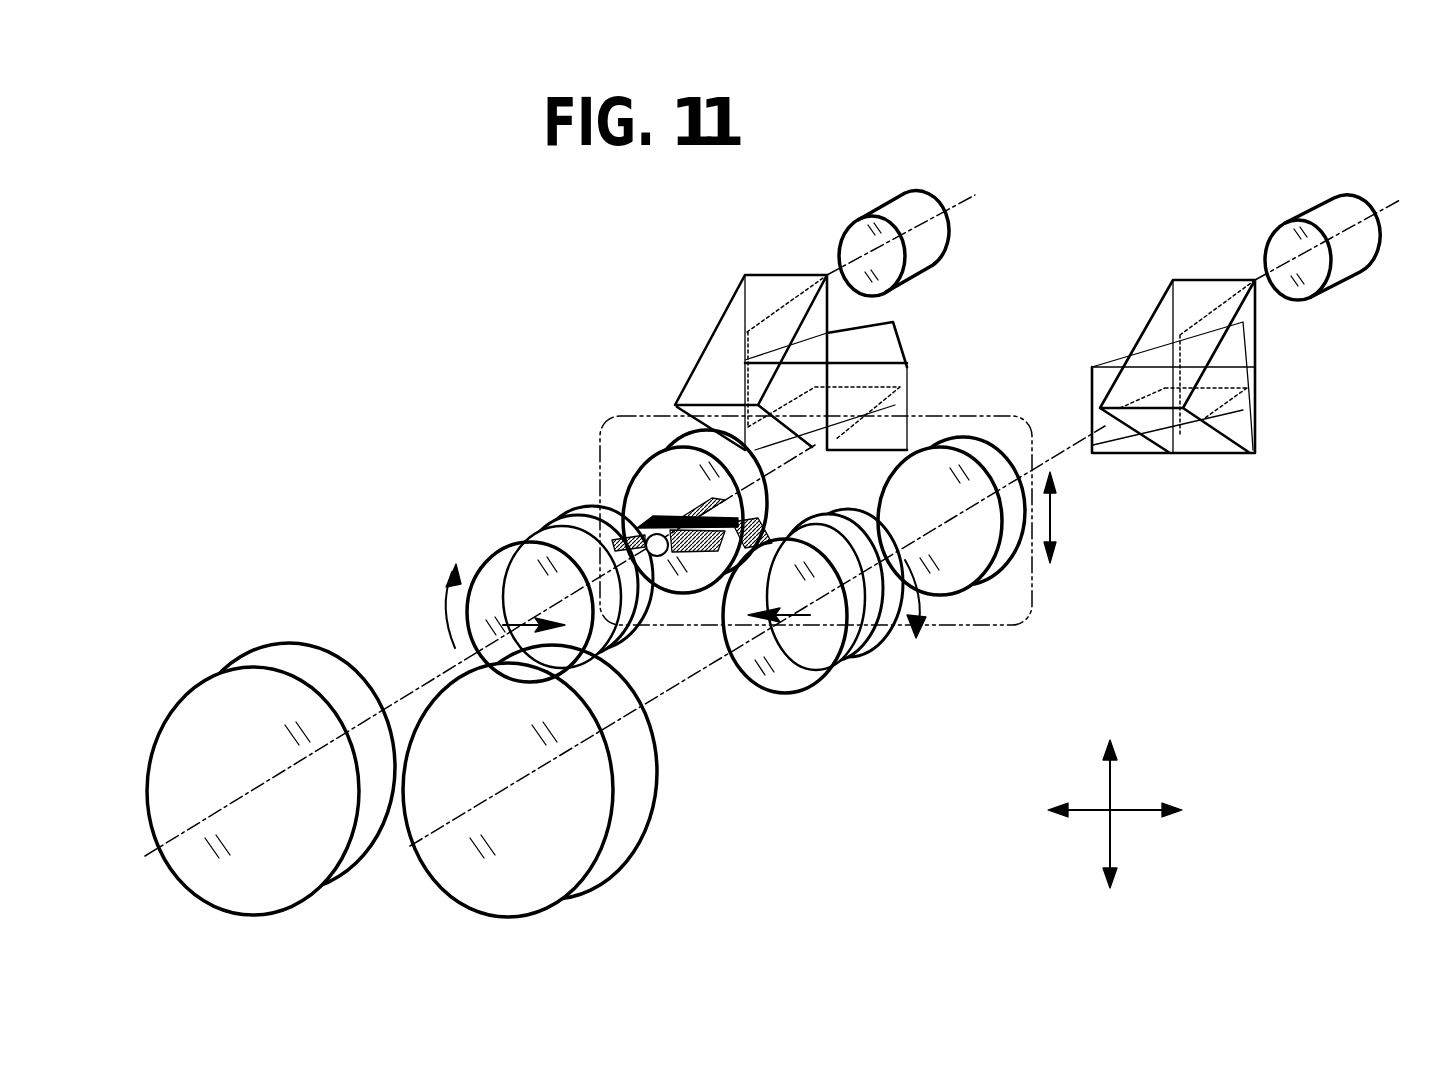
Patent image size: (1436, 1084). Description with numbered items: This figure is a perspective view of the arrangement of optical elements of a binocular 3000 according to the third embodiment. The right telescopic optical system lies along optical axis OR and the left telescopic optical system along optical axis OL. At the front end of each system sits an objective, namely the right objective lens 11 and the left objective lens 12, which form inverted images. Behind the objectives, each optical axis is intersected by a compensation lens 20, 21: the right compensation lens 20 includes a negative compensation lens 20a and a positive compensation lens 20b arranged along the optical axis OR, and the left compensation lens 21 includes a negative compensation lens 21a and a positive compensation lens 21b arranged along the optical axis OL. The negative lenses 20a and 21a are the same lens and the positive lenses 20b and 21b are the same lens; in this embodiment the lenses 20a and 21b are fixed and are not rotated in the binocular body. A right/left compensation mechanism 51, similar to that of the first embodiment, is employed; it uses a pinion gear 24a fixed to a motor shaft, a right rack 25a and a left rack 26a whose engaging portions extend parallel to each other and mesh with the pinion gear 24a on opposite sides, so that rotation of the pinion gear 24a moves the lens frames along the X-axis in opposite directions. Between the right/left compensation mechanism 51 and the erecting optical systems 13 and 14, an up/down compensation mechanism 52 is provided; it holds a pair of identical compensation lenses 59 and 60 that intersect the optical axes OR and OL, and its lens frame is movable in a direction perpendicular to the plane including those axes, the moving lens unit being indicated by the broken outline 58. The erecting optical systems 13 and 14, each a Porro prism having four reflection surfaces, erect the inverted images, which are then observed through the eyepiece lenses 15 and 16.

The binocular 3000 is at (385, 412).
The right objective lens 11 is at (215, 860).
The left objective lens 12 is at (480, 860).
The compensation lens 20 is at (534, 552).
The negative compensation lens 20a is at (535, 538).
The positive compensation lens 20b is at (575, 515).
The compensation lens 21 is at (879, 631).
The negative compensation lens 21a is at (853, 657).
The positive compensation lens 21b is at (880, 633).
The compensation lens 59 is at (665, 478).
The compensation lens 60 is at (967, 545).
The lens holding unit 58 is at (975, 416).
The pinion gear 24a is at (655, 560).
The right rack 25a is at (742, 556).
The left rack 26a is at (750, 520).
The erecting optical system 13 is at (728, 342).
The erecting optical system 14 is at (1230, 373).
The eyepiece lens 15 is at (888, 212).
The eyepiece lens 16 is at (1322, 215).
The right/left compensation mechanism 51 is at (455, 532).
The up/down compensation mechanism 52 is at (1010, 650).
The optical axis OR is at (235, 803).
The optical axis OL is at (500, 800).